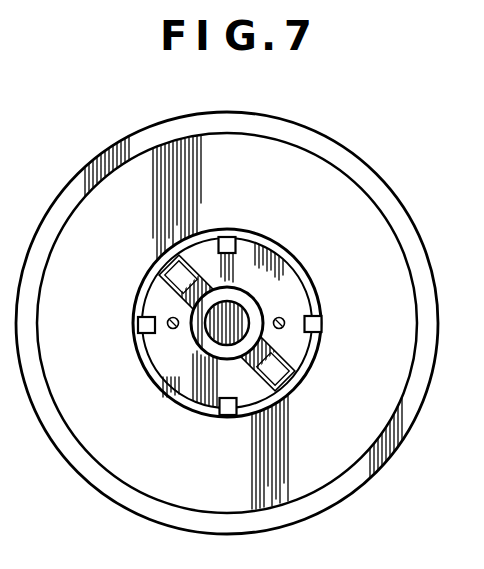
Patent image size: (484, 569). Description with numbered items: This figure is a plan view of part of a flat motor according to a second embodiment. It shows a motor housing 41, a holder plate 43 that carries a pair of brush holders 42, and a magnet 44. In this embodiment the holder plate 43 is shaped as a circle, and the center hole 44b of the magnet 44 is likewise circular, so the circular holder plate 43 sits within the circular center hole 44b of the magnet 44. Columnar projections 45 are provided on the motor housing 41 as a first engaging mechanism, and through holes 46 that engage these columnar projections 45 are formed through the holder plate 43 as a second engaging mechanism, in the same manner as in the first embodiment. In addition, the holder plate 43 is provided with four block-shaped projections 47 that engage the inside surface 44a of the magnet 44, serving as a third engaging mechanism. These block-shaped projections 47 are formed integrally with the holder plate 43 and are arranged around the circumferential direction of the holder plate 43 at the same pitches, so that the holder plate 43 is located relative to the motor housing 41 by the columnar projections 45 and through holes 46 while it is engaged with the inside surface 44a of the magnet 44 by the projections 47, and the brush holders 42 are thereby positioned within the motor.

The motor housing 41 is at (363, 476).
The brush holders 42 is at (169, 266).
The holder plate 43 is at (284, 277).
The magnet 44 is at (358, 208).
The inside surface of magnet 44a is at (249, 236).
The center hole of magnet 44b is at (190, 406).
The columnar projections 45 is at (172, 317).
The through holes 46 is at (173, 329).
The block-shaped projections 47 is at (226, 237).